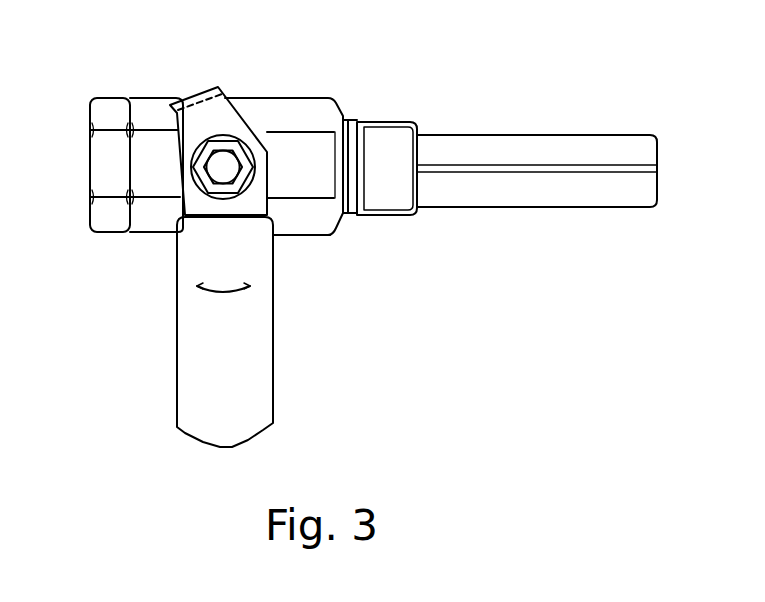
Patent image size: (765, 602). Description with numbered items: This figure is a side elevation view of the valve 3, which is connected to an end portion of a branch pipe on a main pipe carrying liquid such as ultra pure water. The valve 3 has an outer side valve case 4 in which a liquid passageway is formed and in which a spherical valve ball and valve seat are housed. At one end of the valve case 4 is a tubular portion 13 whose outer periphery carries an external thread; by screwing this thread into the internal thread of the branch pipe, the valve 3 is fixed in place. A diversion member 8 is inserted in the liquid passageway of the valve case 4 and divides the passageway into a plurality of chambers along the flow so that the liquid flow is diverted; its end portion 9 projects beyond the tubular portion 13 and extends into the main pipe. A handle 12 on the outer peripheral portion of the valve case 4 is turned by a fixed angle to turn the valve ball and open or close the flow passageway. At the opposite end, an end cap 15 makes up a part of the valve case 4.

The valve 3 is at (285, 95).
The valve case 4 is at (303, 227).
The diversion member 8 is at (540, 190).
The end portion 9 is at (645, 152).
The handle 12 is at (267, 353).
The tubular portion 13 is at (388, 138).
The end cap 15 is at (100, 172).